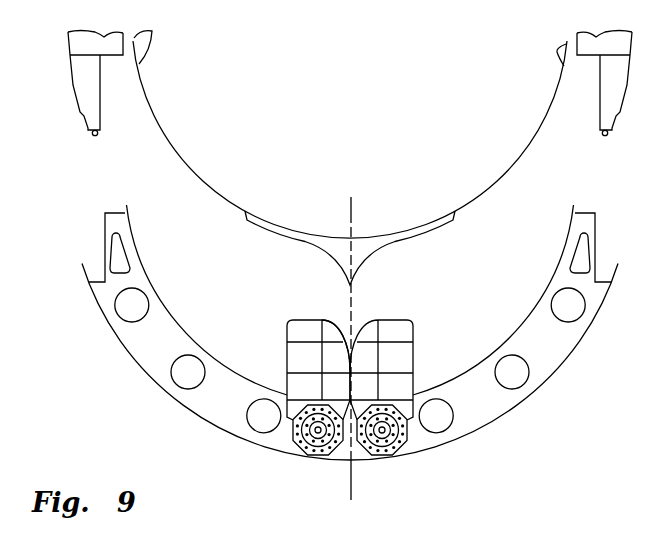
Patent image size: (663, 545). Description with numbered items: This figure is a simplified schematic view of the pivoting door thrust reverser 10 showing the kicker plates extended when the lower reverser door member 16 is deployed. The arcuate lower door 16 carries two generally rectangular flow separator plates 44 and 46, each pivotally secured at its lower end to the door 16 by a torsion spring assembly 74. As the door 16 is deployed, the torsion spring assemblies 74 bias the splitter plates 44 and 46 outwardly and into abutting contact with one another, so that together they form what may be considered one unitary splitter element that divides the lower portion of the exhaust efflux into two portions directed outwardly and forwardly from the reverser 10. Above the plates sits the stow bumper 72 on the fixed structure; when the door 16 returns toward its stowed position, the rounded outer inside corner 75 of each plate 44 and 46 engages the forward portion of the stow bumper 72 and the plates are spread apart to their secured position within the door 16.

The pivoting door thrust reverser 10 is at (351, 197).
The lower reverser door member 16 is at (537, 390).
The flow separator plate 44 is at (298, 360).
The flow separator plate 46 is at (404, 362).
The stow bumper 72 is at (377, 252).
The torsion spring assembly 74 is at (393, 458).
The outer inside corner 75 is at (332, 319).